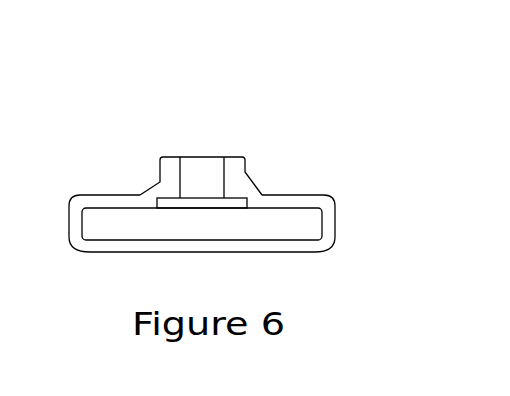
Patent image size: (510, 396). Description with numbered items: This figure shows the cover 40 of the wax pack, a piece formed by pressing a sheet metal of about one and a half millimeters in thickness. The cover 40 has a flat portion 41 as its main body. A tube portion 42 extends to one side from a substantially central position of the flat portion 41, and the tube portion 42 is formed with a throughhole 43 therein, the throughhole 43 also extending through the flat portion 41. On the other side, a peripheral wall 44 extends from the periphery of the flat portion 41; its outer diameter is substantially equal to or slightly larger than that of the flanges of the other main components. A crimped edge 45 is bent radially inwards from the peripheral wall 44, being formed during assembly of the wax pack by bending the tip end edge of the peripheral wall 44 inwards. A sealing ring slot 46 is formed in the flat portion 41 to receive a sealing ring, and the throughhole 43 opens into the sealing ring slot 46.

The cover 40 is at (180, 176).
The flat portion 41 is at (92, 202).
The tube portion 42 is at (247, 162).
The throughhole 43 is at (215, 162).
The peripheral wall 44 is at (68, 223).
The crimped edge 45 is at (84, 252).
The sealing ring slot 46 is at (228, 208).